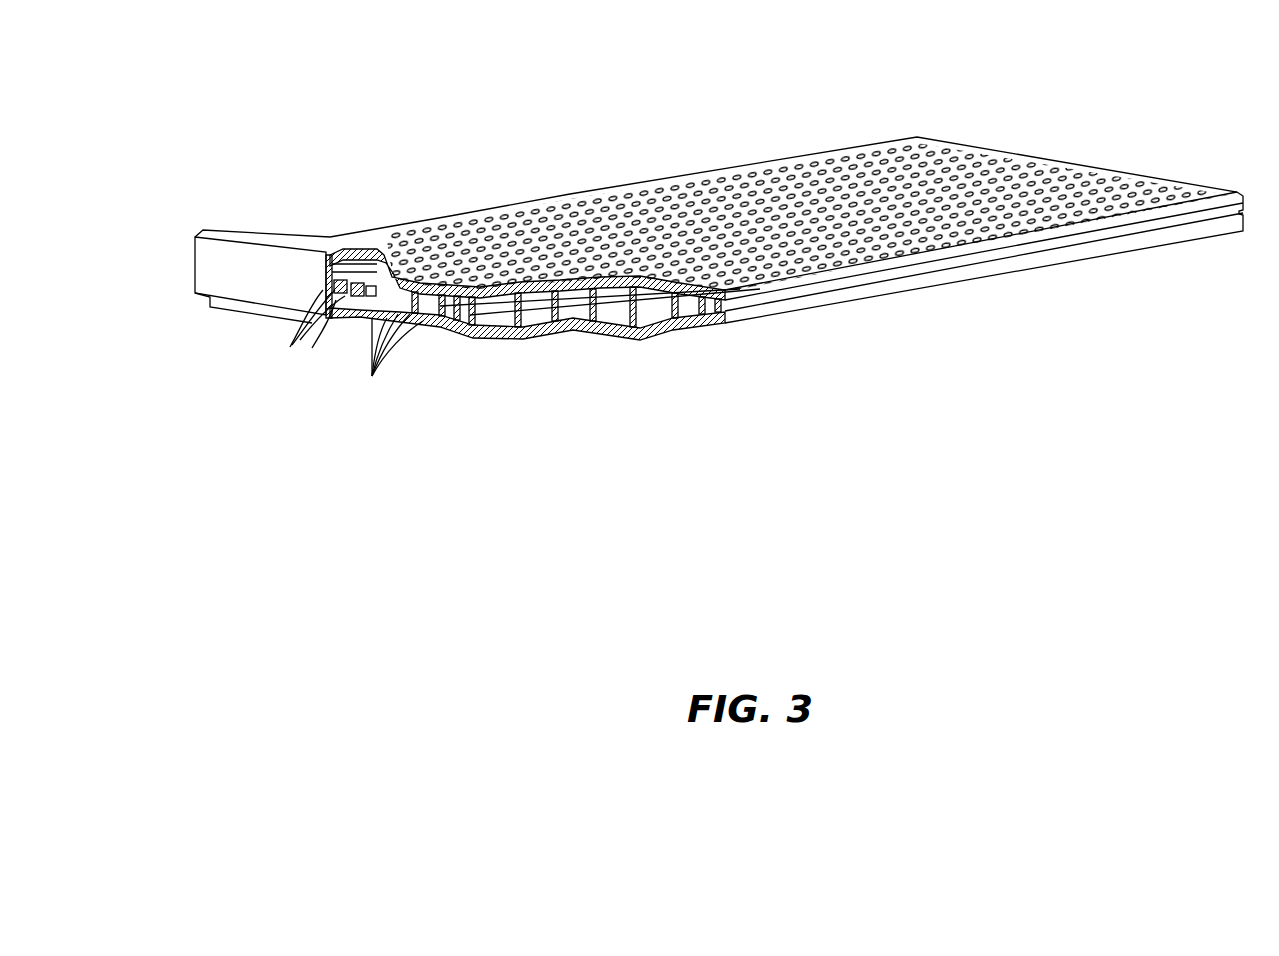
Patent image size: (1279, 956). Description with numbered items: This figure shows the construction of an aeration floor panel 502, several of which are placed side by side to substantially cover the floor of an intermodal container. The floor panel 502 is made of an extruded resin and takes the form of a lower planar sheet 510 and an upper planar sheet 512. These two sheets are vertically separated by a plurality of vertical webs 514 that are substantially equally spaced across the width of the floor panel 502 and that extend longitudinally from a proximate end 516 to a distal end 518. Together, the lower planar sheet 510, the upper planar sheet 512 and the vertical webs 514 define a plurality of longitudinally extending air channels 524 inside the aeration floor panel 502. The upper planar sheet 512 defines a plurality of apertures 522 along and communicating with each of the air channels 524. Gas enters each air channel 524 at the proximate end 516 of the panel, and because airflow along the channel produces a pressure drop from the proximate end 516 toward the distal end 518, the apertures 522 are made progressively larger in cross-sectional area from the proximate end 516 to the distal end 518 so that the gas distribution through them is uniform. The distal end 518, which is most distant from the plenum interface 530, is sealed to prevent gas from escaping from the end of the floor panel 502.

The aeration floor panel 502 is at (384, 97).
The lower planar sheet 510 is at (470, 333).
The upper planar sheet 512 is at (520, 302).
The vertical webs 514 is at (368, 376).
The proximate end 516 is at (302, 360).
The distal end 518 is at (1124, 158).
The apertures 522 is at (917, 137).
The air channels 524 is at (292, 344).
The plenum interface 530 is at (274, 237).